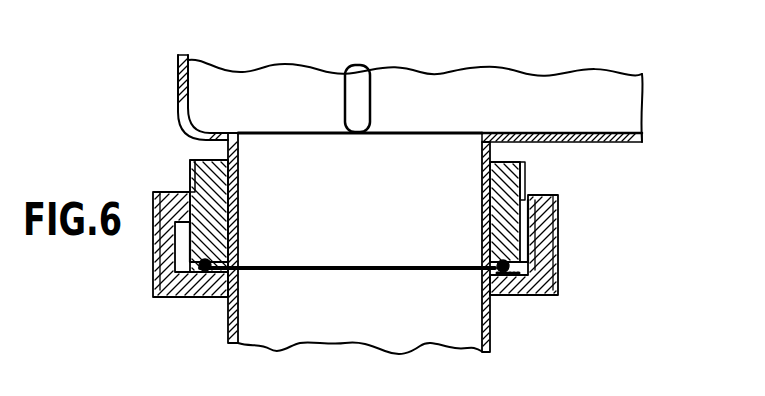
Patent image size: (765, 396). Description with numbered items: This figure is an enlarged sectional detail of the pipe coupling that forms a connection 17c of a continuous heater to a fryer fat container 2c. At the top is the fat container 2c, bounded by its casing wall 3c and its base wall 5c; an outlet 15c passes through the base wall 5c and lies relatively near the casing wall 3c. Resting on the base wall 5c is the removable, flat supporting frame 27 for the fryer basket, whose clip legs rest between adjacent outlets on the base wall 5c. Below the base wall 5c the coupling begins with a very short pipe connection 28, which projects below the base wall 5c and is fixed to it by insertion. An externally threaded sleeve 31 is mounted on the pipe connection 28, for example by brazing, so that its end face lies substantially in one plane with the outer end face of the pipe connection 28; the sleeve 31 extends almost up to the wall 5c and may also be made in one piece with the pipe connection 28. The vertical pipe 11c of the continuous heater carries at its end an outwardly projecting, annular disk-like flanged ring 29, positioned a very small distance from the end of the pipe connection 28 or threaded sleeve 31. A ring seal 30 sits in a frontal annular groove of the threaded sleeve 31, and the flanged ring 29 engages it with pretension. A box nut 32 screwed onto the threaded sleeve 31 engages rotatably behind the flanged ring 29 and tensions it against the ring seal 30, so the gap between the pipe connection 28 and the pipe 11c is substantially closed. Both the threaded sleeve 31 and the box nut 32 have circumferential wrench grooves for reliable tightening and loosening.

The fat container 2c is at (574, 60).
The casing wall 3c is at (528, 80).
The base wall 5c is at (565, 133).
The outlet 15c is at (400, 132).
The vertical pipe 11c is at (228, 318).
The connection 17c is at (578, 274).
The supporting frame 27 is at (345, 80).
The pipe connection 28 is at (492, 150).
The flanged ring 29 is at (500, 292).
The ring seal 30 is at (483, 253).
The threaded sleeve 31 is at (497, 182).
The box nut 32 is at (556, 240).